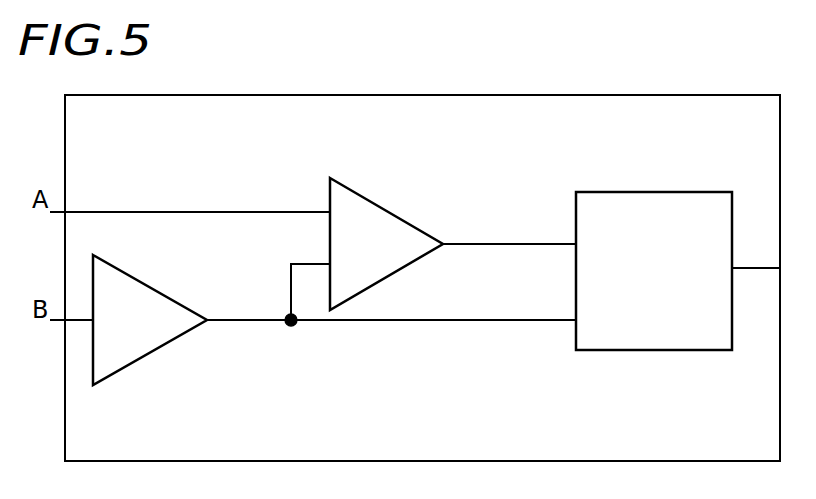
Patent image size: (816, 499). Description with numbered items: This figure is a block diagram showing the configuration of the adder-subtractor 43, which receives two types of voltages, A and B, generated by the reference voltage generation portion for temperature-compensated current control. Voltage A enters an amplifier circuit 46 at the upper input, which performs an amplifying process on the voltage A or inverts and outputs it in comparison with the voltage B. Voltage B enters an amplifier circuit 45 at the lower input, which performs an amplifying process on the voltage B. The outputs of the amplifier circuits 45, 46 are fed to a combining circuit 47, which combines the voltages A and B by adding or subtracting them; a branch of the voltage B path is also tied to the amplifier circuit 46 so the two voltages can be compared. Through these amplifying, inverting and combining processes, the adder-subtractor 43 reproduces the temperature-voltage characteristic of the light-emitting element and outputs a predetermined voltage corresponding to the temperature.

The adder-subtractor 43 is at (587, 95).
The amplifier circuit 45 is at (165, 298).
The amplifier circuit 46 is at (372, 200).
The combining circuit 47 is at (669, 192).